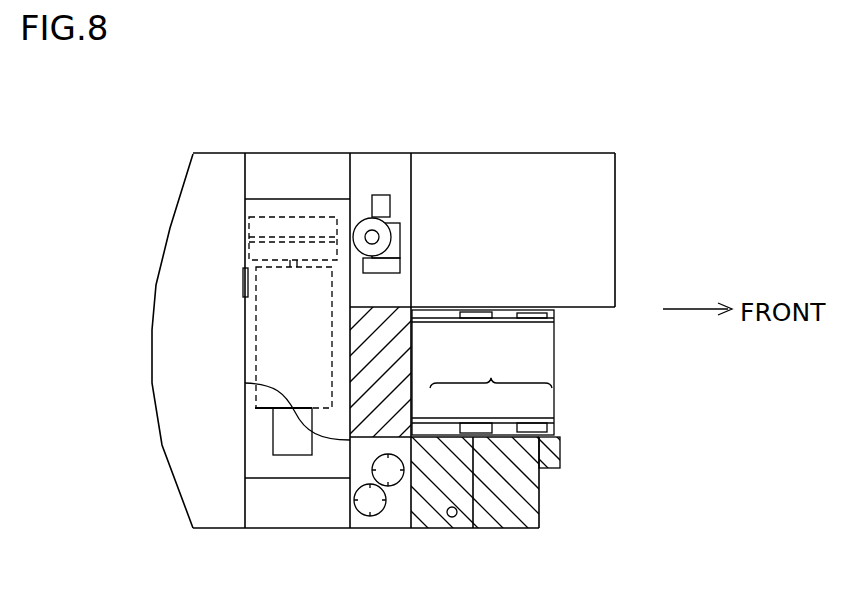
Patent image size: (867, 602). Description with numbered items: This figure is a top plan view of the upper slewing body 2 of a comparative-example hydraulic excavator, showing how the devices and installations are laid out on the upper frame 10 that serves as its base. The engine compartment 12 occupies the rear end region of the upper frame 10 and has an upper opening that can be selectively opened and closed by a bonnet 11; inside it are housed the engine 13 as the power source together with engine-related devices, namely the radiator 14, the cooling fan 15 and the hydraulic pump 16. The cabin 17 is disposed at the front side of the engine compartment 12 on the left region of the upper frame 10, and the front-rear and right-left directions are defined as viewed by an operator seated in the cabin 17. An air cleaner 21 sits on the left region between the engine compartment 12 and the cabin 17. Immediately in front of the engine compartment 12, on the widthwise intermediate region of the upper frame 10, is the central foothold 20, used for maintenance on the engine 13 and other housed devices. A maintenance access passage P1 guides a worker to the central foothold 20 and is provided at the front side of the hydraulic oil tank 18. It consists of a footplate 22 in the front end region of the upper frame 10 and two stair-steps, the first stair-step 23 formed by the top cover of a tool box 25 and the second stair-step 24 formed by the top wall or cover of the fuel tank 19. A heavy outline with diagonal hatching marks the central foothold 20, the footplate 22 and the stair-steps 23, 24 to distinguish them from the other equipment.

The upper slewing body 2 is at (343, 150).
The cabin 17 is at (535, 152).
The radiator 14 is at (288, 216).
The cooling fan 15 is at (245, 251).
The bonnet 11 is at (245, 318).
The engine 13 is at (245, 367).
The engine compartment 12 is at (247, 425).
The hydraulic pump 16 is at (283, 456).
The air cleaner 21 is at (401, 236).
The central foothold 20 is at (412, 352).
The upper frame 10 is at (556, 356).
The maintenance access passage P1 is at (491, 368).
The second stair-step 24 is at (435, 428).
The first stair-step 23 is at (503, 433).
The footplate 22 is at (542, 432).
The hydraulic oil tank 18 is at (363, 529).
The fuel tank 19 is at (438, 529).
The tool box 25 is at (512, 529).